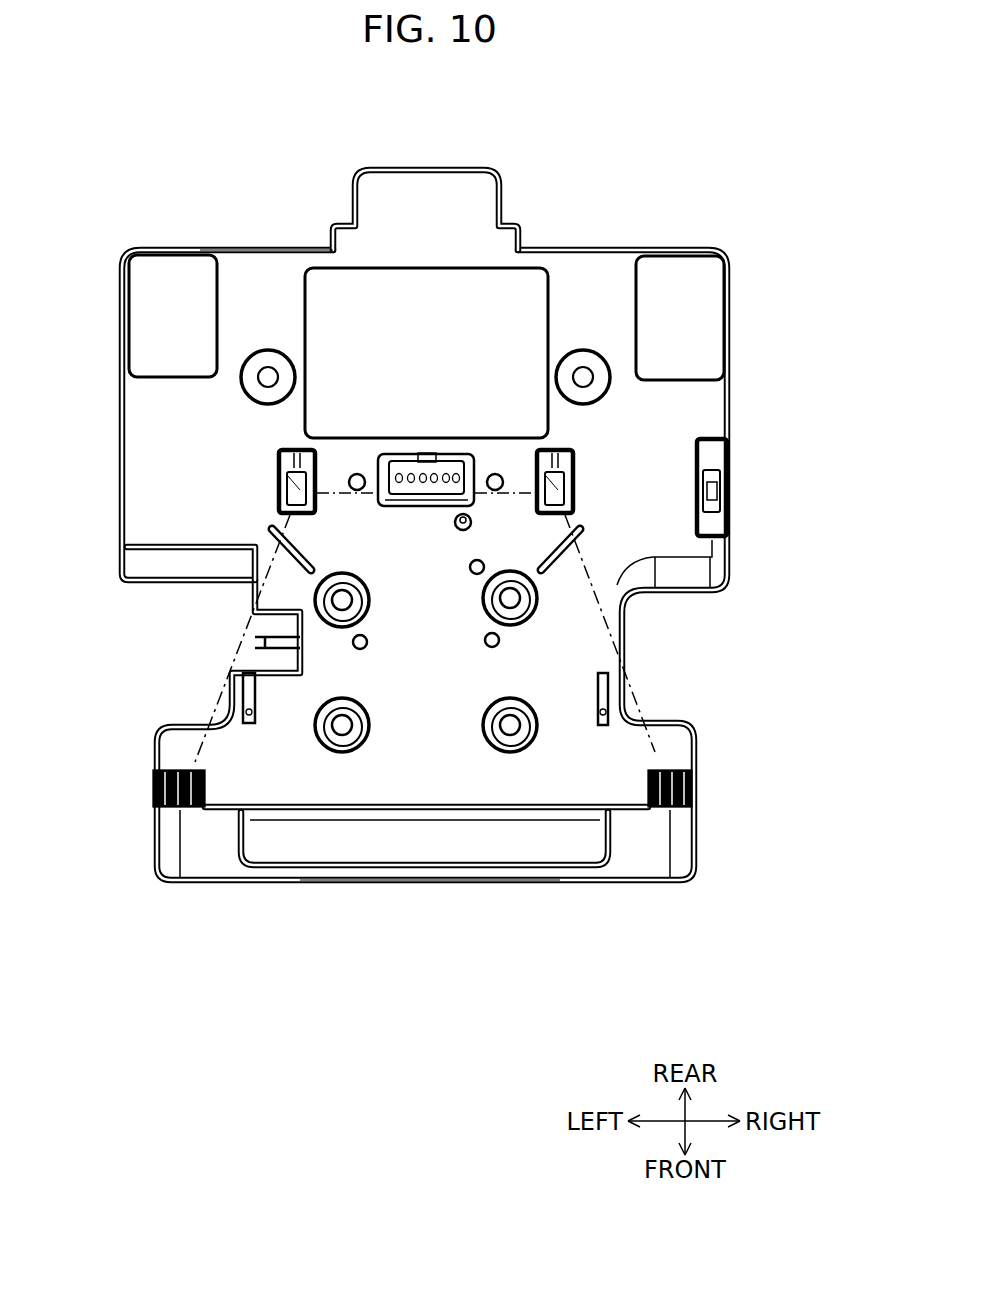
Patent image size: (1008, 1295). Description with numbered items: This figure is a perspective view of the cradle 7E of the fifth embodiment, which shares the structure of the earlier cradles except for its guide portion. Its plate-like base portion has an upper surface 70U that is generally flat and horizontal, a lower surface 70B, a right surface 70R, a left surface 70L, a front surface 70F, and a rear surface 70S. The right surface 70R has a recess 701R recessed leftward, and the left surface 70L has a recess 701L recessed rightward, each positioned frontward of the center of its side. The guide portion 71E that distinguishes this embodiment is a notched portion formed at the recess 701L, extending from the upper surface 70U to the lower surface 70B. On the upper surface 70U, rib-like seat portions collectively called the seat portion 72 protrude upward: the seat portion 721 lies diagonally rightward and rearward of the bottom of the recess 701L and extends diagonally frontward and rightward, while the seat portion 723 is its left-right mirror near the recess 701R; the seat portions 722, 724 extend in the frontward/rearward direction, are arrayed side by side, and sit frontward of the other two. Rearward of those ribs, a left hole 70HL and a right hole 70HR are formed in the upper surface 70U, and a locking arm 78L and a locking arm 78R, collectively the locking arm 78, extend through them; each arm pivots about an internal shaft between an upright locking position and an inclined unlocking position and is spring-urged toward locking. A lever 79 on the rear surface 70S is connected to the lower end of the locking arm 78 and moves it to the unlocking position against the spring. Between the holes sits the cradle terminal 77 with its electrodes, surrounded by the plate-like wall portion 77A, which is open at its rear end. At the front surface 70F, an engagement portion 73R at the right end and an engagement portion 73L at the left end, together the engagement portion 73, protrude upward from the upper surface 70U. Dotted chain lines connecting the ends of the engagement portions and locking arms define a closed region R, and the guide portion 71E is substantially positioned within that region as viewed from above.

The cradle 7E is at (594, 183).
The lever 79 is at (416, 205).
The rear surface 70S is at (260, 248).
The left surface 70L is at (117, 327).
The right surface 70R is at (729, 328).
The upper surface 70U is at (672, 418).
The cradle terminal 77 is at (445, 470).
The wall portion 77A is at (416, 508).
The locking arm 78 is at (802, 446).
The left locking arm 78L is at (280, 488).
The right locking arm 78R is at (580, 475).
The left hole 70HL is at (292, 456).
The right hole 70HR is at (565, 455).
The recess 701L is at (228, 612).
The recess 701R is at (627, 635).
The lower surface 70B is at (276, 656).
The guide portion 71E is at (243, 688).
The seat portion 72 is at (575, 964).
The seat portion 721 is at (300, 562).
The seat portion 722 is at (256, 690).
The seat portion 723 is at (565, 562).
The seat portion 724 is at (600, 700).
The engagement portion 73 is at (200, 981).
The engagement portion 73L is at (205, 840).
The engagement portion 73R is at (645, 840).
The front surface 70F is at (628, 878).
The closed region R is at (623, 757).